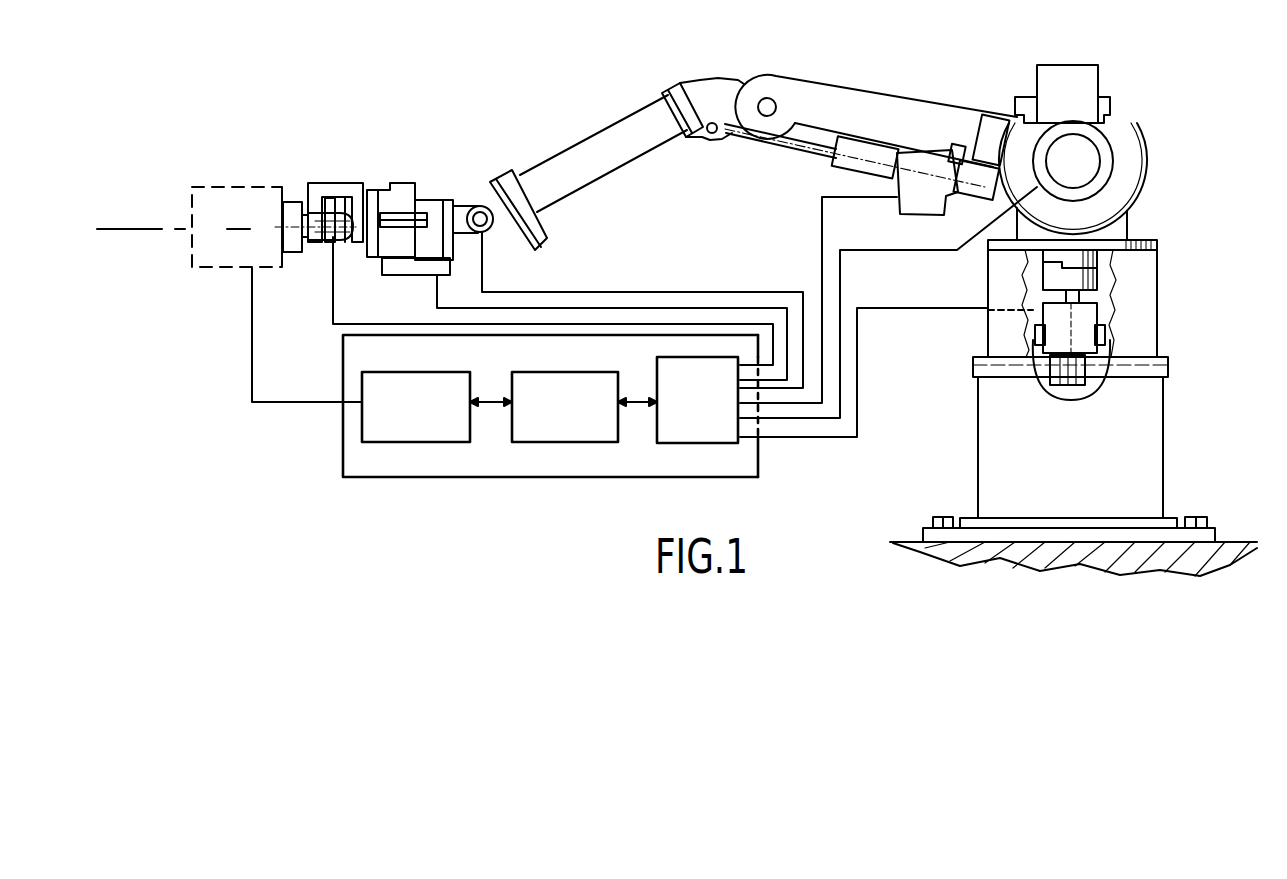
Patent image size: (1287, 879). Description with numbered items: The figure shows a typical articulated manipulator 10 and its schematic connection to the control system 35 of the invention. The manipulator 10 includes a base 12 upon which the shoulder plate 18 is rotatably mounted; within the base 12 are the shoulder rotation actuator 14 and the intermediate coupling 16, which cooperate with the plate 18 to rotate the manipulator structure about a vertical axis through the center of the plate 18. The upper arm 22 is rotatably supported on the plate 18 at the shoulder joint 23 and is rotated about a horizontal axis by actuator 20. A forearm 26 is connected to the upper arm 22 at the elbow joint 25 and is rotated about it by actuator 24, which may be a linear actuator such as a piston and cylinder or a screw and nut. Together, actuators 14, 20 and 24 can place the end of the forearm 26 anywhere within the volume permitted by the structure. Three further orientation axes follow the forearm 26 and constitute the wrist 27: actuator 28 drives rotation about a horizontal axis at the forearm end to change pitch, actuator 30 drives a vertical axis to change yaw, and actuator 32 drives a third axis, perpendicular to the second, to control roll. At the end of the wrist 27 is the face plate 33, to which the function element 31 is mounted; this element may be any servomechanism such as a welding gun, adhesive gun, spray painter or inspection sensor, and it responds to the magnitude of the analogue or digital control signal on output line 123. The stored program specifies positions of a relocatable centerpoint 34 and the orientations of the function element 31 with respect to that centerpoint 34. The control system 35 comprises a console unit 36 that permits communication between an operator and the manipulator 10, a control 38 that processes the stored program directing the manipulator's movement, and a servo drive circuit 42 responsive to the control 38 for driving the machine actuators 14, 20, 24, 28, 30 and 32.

The articulated manipulator 10 is at (847, 60).
The base 12 is at (1163, 418).
The shoulder rotation actuator 14 is at (1113, 305).
The intermediate coupling 16 is at (1107, 277).
The shoulder plate 18 is at (1143, 242).
The actuator 20 is at (1118, 162).
The upper arm 22 is at (878, 89).
The shoulder joint 23 is at (1122, 88).
The actuator 24 is at (920, 215).
The elbow joint 25 is at (762, 67).
The forearm 26 is at (620, 172).
The wrist 27 is at (329, 163).
The actuator 28 is at (490, 233).
The actuator 30 is at (400, 203).
The function element 31 is at (205, 180).
The actuator 32 is at (310, 243).
The face plate 33 is at (283, 187).
The centerpoint 34 is at (110, 230).
The control system 35 is at (608, 371).
The console unit 36 is at (450, 442).
The control 38 is at (593, 443).
The servo drive circuit 42 is at (720, 443).
The output line 123 is at (252, 297).